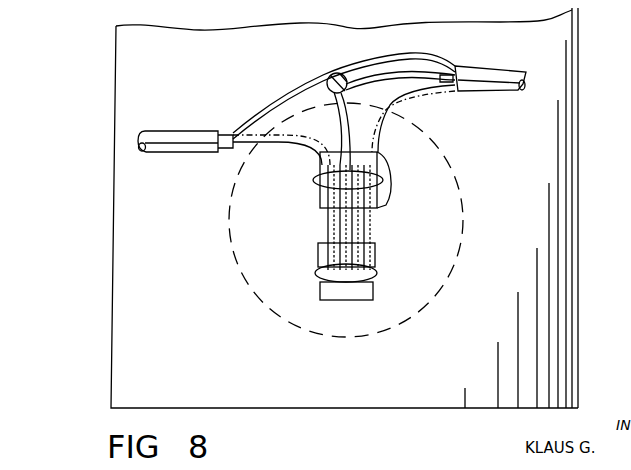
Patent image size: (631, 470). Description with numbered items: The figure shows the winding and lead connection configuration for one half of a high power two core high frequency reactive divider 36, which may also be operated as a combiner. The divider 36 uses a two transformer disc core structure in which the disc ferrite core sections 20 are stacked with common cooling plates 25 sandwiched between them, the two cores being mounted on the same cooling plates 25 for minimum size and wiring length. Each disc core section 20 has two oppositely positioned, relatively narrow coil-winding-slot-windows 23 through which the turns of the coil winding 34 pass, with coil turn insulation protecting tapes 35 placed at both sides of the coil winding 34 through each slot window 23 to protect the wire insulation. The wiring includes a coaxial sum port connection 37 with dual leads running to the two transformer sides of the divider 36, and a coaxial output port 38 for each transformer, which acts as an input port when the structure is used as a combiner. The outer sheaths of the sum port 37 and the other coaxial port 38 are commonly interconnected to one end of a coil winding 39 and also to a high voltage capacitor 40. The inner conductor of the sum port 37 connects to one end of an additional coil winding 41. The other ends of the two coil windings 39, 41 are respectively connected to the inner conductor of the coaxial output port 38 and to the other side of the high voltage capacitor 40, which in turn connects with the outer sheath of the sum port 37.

The disc ferrite core section 20 is at (462, 252).
The coil-winding-slot-window 23 is at (314, 180).
The cooling plate 25 is at (578, 290).
The coil winding 34 is at (339, 226).
The coil turn insulation protecting tape 35 is at (318, 262).
The divider 36 is at (86, 371).
The sum port connection 37 is at (478, 68).
The coaxial output port 38 is at (206, 131).
The coil winding 39 is at (387, 180).
The high voltage capacitor 40 is at (330, 78).
The additional coil winding 41 is at (335, 222).